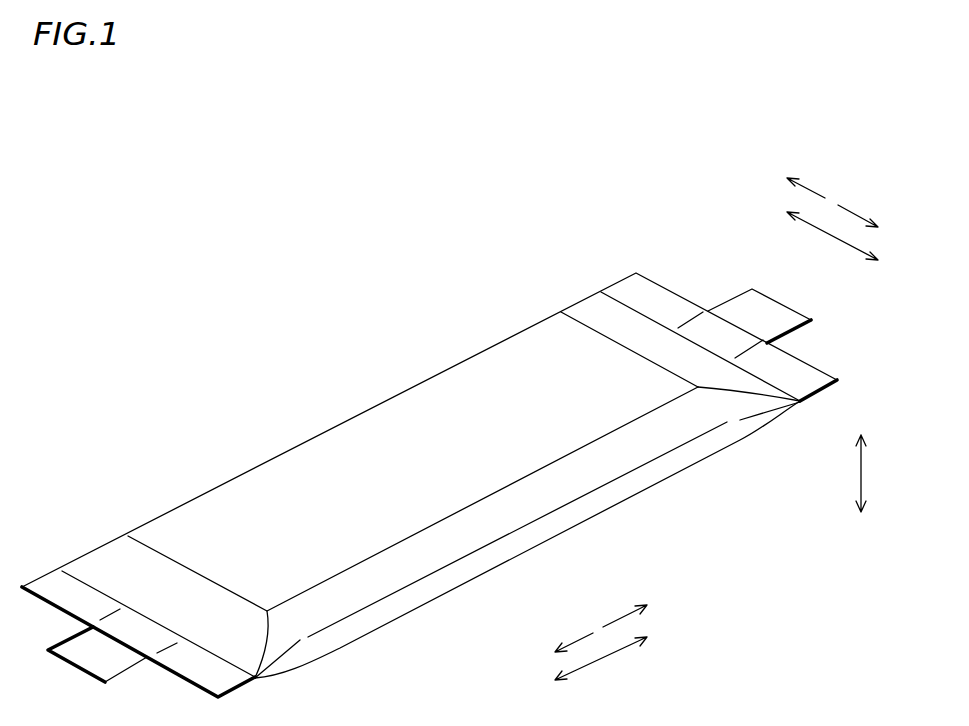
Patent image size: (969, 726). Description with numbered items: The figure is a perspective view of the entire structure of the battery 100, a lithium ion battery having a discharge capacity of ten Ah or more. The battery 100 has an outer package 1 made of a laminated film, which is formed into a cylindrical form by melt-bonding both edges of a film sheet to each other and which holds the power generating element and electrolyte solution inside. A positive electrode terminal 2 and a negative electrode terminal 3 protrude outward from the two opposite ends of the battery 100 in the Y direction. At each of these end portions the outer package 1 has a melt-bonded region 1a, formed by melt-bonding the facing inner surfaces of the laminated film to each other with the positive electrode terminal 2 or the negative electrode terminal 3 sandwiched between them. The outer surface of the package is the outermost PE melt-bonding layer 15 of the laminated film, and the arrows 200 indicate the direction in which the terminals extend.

The battery 100 is at (507, 245).
The outer package 1 is at (428, 395).
The melt-bonded region 1a is at (48, 586).
The PE melt-bonding layer 15 is at (297, 460).
The positive electrode terminal 2 is at (103, 658).
The negative electrode terminal 3 is at (737, 313).
The external connection direction 200 is at (793, 301).